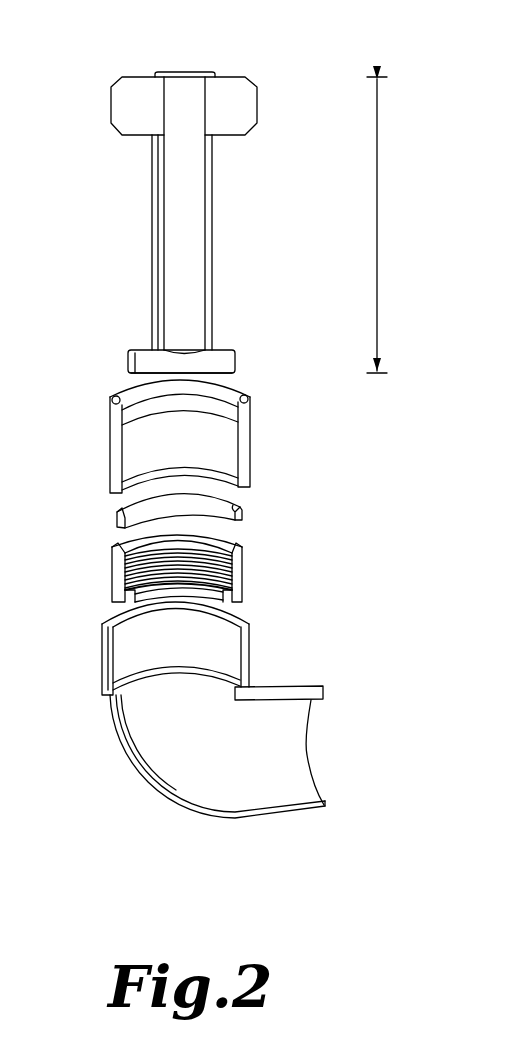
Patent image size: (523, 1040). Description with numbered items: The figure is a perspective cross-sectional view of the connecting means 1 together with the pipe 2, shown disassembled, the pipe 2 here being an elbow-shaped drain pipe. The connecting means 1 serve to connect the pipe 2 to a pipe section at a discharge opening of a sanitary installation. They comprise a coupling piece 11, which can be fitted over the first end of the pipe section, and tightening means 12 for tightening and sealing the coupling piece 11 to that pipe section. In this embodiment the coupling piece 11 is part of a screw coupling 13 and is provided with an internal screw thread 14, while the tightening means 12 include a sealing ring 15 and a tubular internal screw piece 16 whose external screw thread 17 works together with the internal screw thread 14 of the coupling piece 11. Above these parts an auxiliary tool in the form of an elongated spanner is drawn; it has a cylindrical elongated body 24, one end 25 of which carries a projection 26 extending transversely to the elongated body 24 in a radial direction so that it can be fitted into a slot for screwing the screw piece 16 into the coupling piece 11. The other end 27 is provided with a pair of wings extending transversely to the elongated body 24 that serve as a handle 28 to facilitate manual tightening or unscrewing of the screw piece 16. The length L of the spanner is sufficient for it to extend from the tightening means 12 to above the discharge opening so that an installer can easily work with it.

The connecting means 1 is at (95, 272).
The pipe 2 is at (187, 746).
The coupling piece 11 is at (245, 405).
The tightening means 12 is at (305, 522).
The screw coupling 13 is at (88, 468).
The internal screw thread 14 is at (235, 454).
The sealing ring 15 is at (247, 517).
The tubular internal screw piece 16 is at (191, 558).
The external screw thread 17 is at (108, 583).
The elongated body 24 is at (197, 215).
The one end 25 is at (110, 365).
The projection 26 is at (236, 372).
The other end 27 is at (90, 107).
The handle 28 is at (140, 95).
The length of the spanner L is at (383, 225).